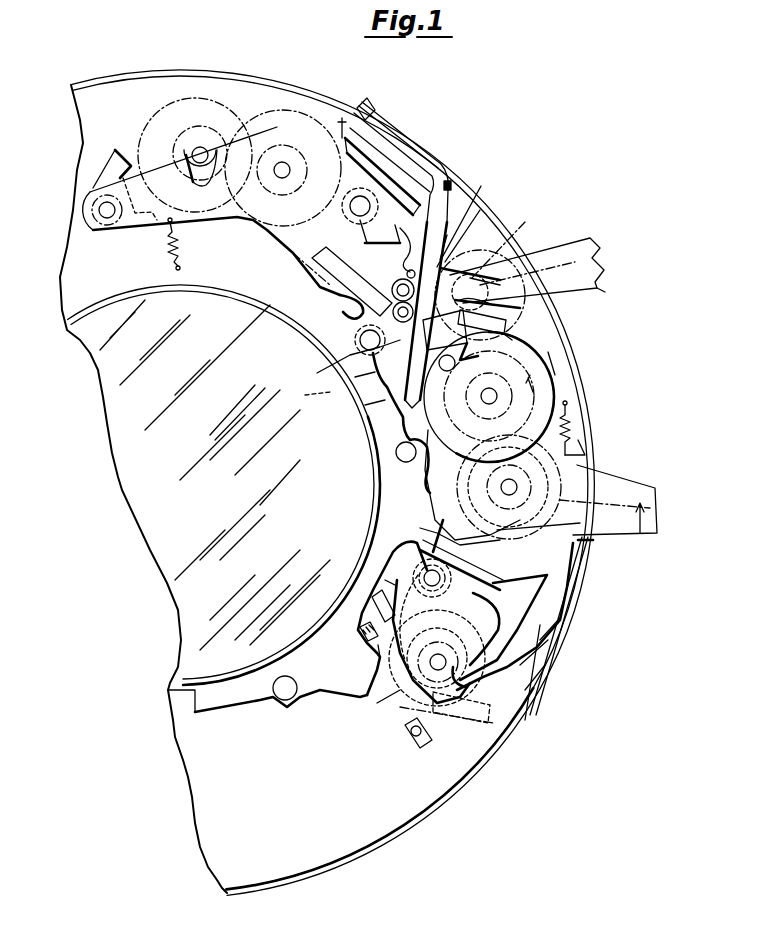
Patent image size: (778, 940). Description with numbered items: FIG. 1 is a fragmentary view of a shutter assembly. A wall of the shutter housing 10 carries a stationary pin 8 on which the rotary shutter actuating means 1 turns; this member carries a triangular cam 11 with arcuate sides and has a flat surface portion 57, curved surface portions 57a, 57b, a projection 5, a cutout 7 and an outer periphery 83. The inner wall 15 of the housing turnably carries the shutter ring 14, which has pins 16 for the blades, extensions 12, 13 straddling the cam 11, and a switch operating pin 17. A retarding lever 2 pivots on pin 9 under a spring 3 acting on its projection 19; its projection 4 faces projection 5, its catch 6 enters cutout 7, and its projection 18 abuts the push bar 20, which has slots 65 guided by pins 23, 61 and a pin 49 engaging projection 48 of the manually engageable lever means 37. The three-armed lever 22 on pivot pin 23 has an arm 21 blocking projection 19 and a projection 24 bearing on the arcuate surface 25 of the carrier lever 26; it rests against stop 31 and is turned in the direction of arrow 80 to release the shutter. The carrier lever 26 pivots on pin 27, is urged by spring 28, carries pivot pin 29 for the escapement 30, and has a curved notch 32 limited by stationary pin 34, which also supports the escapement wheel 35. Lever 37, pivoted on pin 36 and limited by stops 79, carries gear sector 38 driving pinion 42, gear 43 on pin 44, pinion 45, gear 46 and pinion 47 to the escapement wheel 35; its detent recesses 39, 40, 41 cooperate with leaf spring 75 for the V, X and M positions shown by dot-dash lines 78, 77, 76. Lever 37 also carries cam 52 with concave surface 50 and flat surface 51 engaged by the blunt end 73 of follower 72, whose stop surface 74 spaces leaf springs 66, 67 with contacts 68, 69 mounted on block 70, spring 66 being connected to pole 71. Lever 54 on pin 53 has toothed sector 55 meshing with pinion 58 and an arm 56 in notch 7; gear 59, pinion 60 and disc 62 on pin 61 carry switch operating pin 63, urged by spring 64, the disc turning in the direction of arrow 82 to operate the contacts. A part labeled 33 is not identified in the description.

The rotary shutter actuating means 1 is at (418, 733).
The retarding lever 2 is at (400, 553).
The spring 3 is at (380, 598).
The projection 4 is at (363, 620).
The projection 5 is at (378, 645).
The projection 6 is at (545, 665).
The cutout 7 is at (505, 722).
The stationary pin 8 is at (430, 660).
The stationary pin 9 is at (415, 575).
The shutter housing 10 is at (400, 830).
The cam 11 is at (385, 580).
The extension 12 is at (435, 530).
The extension 13 is at (400, 715).
The shutter ring 14 is at (220, 703).
The inner wall 15 is at (283, 318).
The pins 16 is at (392, 453).
The switch operating pin 17 is at (330, 372).
The projection 18 is at (568, 598).
The projection 19 is at (445, 590).
The push bar 20 is at (540, 555).
The projection 21 is at (455, 560).
The three-armed lever 22 is at (598, 540).
The pivot pin 23 is at (522, 485).
The projection 24 is at (397, 290).
The arcuate surface 25 is at (343, 315).
The carrier lever 26 is at (290, 252).
The stationary pivot pin 27 is at (282, 162).
The spring 28 is at (180, 246).
The pivot pin 29 is at (106, 218).
The escapement 30 is at (118, 163).
The stop 31 is at (588, 548).
The curved notch 32 is at (192, 185).
The pawl edge 33 is at (183, 157).
The stationary pin 34 is at (198, 148).
The escapement wheel 35 is at (163, 122).
The stationary pin 36 is at (400, 302).
The manually engageable lever means 37 is at (605, 292).
The gear sector 38 is at (380, 256).
The detent recess 39 is at (408, 258).
The detent recess 40 is at (445, 276).
The detent recess 41 is at (483, 270).
The pinion 42 is at (370, 210).
The gear 43 is at (300, 258).
The stationary pin 44 is at (355, 222).
The pinion 45 is at (275, 190).
The gear 46 is at (263, 120).
The pinion 47 is at (203, 140).
The projection 48 is at (515, 252).
The pin 49 is at (493, 305).
The concave surface 50 is at (482, 322).
The flat surface 51 is at (510, 326).
The cam 52 is at (470, 352).
The pin 53 is at (560, 618).
The lever 54 is at (548, 640).
The toothed sector 55 is at (580, 518).
The arm 56 is at (525, 703).
The flat surface portion 57 is at (470, 660).
The curved surface portion 57a is at (487, 685).
The curved surface portion 57b is at (470, 598).
The pinion 58 is at (445, 480).
The gear 59 is at (588, 455).
The pinion 60 is at (547, 352).
The stationary pin 61 is at (481, 394).
The disc 62 is at (548, 352).
The switch operating pin 63 is at (457, 365).
The spring 64 is at (570, 425).
The elongated slots 65 is at (514, 410).
The leaf spring 66 is at (447, 235).
The leaf spring 67 is at (355, 377).
The switch contact 68 is at (398, 408).
The switch contact 69 is at (365, 405).
The block 70 is at (413, 157).
The pole 71 is at (378, 110).
The follower member 72 is at (308, 382).
The free end 73 is at (493, 290).
The stop surface 74 is at (436, 315).
The leaf spring 75 is at (480, 210).
The dot-dash line 76 is at (481, 186).
The dot-dash lines 77 is at (525, 222).
The dot-dash lines 78 is at (527, 270).
The stops 79 is at (460, 184).
The arrow 80 is at (640, 528).
The arrow 82 is at (535, 383).
The outer periphery 83 is at (395, 700).